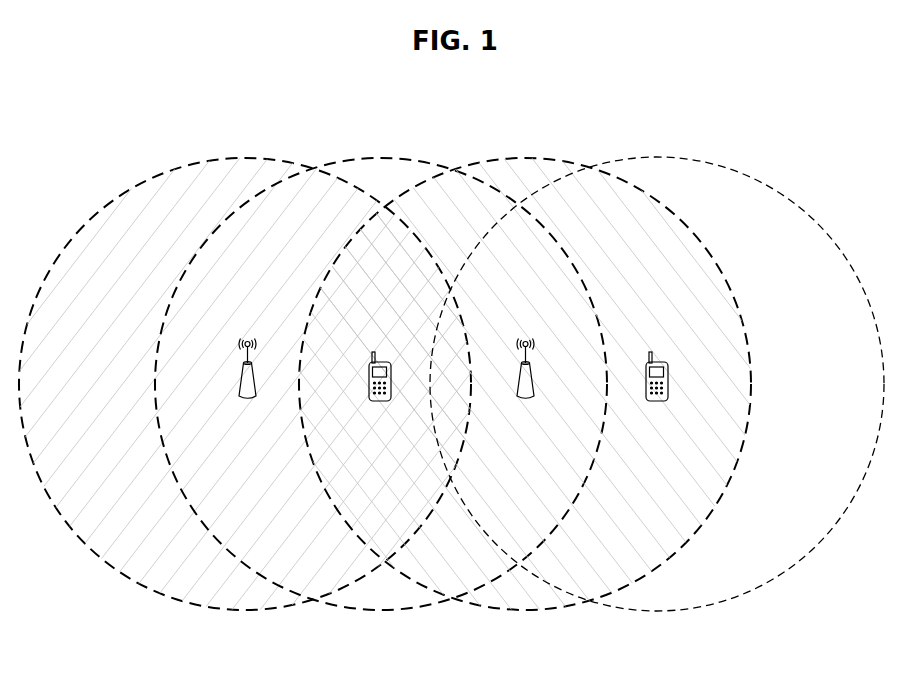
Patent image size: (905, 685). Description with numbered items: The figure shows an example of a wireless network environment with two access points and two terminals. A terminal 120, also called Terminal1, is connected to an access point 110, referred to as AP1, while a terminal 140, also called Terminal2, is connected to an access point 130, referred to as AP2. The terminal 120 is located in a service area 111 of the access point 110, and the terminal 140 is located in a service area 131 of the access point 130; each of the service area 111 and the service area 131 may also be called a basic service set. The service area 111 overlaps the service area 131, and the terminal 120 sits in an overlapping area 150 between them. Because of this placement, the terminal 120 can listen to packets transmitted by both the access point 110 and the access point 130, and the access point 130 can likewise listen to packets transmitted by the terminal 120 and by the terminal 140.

The access point 110 is at (248, 438).
The service area 111 is at (170, 172).
The terminal 120 is at (377, 438).
The access point 130 is at (523, 435).
The service area 131 is at (542, 158).
The terminal 140 is at (657, 435).
The overlapping area 150 is at (385, 260).